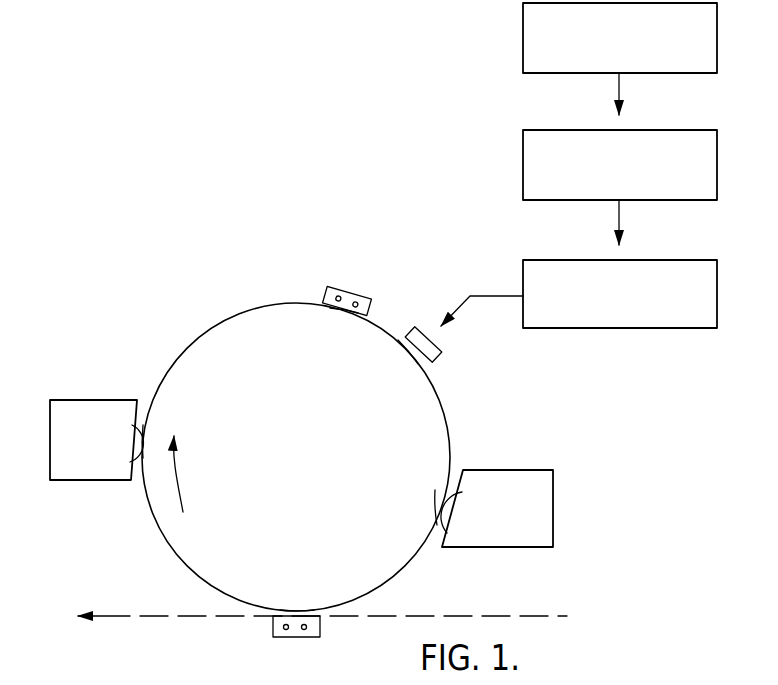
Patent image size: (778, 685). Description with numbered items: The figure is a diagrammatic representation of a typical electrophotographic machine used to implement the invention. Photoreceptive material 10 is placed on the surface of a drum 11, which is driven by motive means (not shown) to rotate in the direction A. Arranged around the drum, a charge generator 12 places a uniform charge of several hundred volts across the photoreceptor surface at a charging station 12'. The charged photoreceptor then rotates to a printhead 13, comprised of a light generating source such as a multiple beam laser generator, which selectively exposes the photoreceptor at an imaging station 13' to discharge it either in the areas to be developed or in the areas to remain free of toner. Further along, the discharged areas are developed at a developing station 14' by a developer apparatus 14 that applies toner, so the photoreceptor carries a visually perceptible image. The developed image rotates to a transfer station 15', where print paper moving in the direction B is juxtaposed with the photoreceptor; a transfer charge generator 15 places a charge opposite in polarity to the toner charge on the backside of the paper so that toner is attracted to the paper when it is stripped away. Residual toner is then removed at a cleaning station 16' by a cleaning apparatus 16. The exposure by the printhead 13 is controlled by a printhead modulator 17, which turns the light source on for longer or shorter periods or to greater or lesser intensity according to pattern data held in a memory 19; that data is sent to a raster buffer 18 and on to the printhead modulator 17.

The photoreceptive material 10 is at (237, 315).
The drum 11 is at (306, 498).
The charge generator 12 is at (357, 284).
The charging station 12' is at (329, 328).
The printhead 13 is at (449, 364).
The imaging station 13' is at (389, 367).
The developer apparatus 14 is at (497, 532).
The developing station 14' is at (418, 506).
The transfer charge generator 15 is at (316, 635).
The transfer station 15' is at (316, 581).
The cleaning apparatus 16 is at (96, 405).
The cleaning station 16' is at (176, 413).
The printhead modulator means 17 is at (542, 260).
The raster buffer 18 is at (523, 161).
The memory 19 is at (523, 52).
The direction of drum rotation A is at (178, 462).
The direction of print paper movement B is at (322, 628).